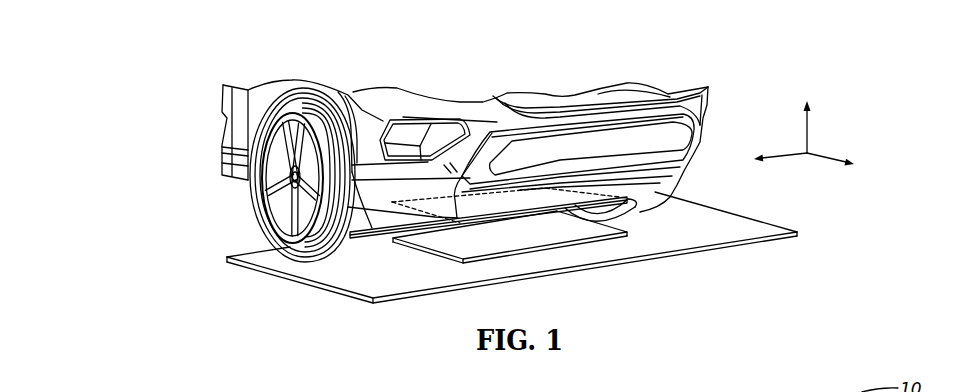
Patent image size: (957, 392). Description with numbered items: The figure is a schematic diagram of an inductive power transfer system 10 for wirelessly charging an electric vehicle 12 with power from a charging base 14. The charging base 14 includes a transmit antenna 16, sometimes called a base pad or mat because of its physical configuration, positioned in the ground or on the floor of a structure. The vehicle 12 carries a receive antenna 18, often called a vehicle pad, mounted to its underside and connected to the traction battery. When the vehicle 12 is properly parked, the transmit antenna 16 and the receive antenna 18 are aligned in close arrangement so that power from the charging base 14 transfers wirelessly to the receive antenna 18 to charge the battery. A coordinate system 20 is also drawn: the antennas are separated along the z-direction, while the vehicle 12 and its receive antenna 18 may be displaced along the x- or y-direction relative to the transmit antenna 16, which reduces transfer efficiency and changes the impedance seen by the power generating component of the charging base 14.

The inductive power transfer system 10 is at (668, 52).
The electric vehicle 12 is at (311, 64).
The charging base 14 is at (315, 292).
The transmit antenna 16 is at (520, 237).
The receive antenna 18 is at (567, 210).
The coordinate system 20 is at (835, 133).